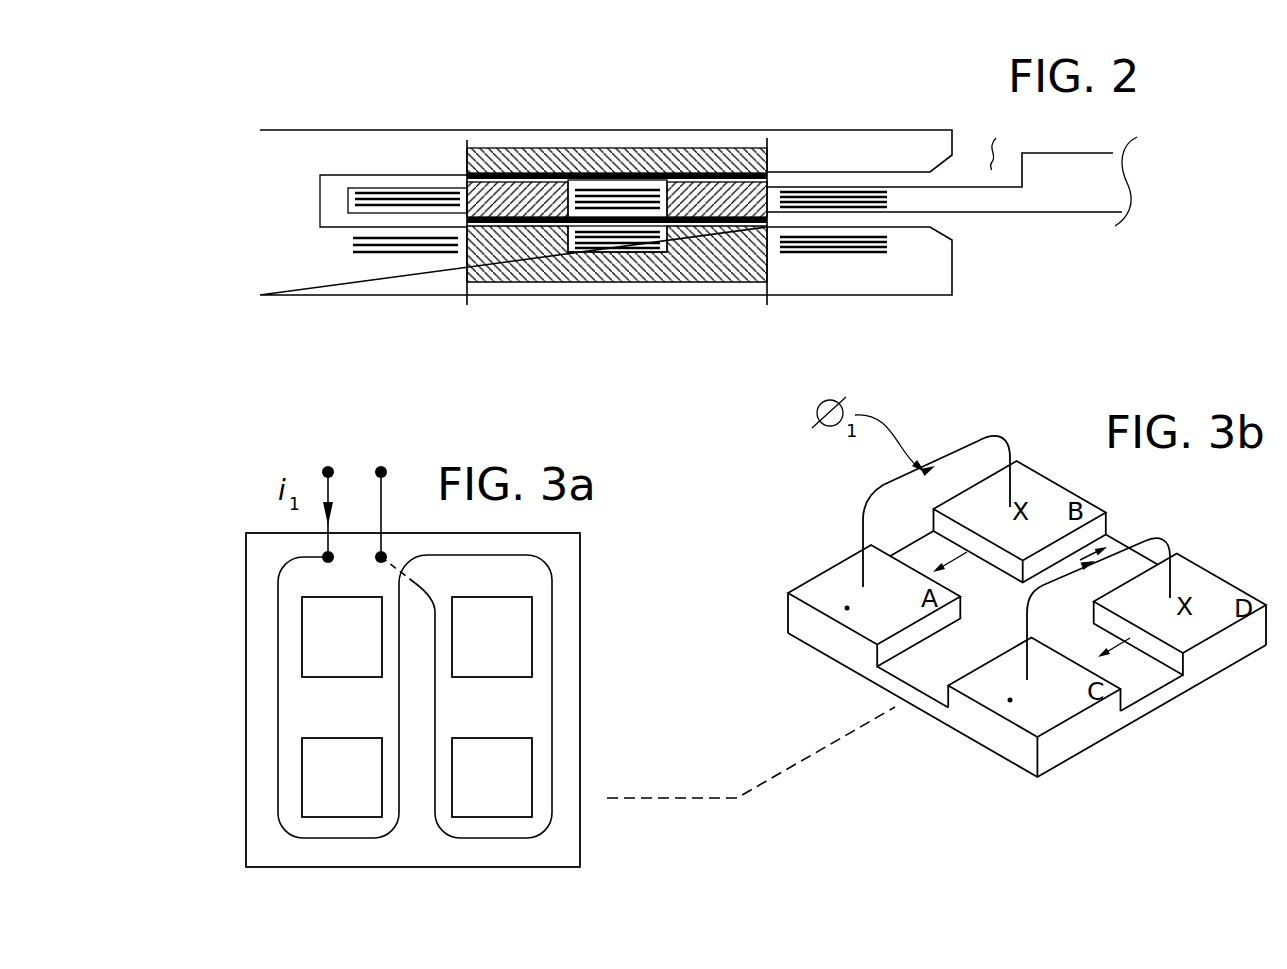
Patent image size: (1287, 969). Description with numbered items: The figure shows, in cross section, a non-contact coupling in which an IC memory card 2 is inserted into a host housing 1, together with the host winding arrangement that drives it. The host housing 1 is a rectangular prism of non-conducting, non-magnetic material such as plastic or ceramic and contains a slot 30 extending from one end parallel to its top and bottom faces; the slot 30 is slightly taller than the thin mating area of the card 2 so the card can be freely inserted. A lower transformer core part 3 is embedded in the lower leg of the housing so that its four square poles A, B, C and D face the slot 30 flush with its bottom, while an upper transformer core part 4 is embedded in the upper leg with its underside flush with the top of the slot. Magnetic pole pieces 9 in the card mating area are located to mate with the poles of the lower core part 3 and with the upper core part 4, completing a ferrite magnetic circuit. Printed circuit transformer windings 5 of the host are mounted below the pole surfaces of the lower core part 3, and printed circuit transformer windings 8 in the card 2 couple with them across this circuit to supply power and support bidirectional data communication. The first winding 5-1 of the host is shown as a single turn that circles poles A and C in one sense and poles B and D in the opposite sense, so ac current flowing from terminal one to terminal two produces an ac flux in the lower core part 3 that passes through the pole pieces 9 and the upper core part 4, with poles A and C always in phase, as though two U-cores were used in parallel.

In FIG. 2, the host housing 1 is at (364, 121).
In FIG. 3a, the host housing 1 is at (327, 498).
In FIG. 2, the IC memory card 2 is at (1050, 212).
In FIG. 3a, the IC memory card 2 is at (380, 498).
In FIG. 2, the lower transformer core part 3 is at (769, 258).
In FIG. 2, the upper transformer core part 4 is at (642, 147).
In FIG. 2, the printed circuit transformer windings 5 is at (398, 264).
In FIG. 2, the printed circuit transformer windings 8 is at (840, 186).
In FIG. 2, the magnetic pole pieces 9 is at (777, 178).
In FIG. 2, the housing slot 30 is at (338, 230).
In FIG. 3a, the first winding 5-1 is at (234, 700).